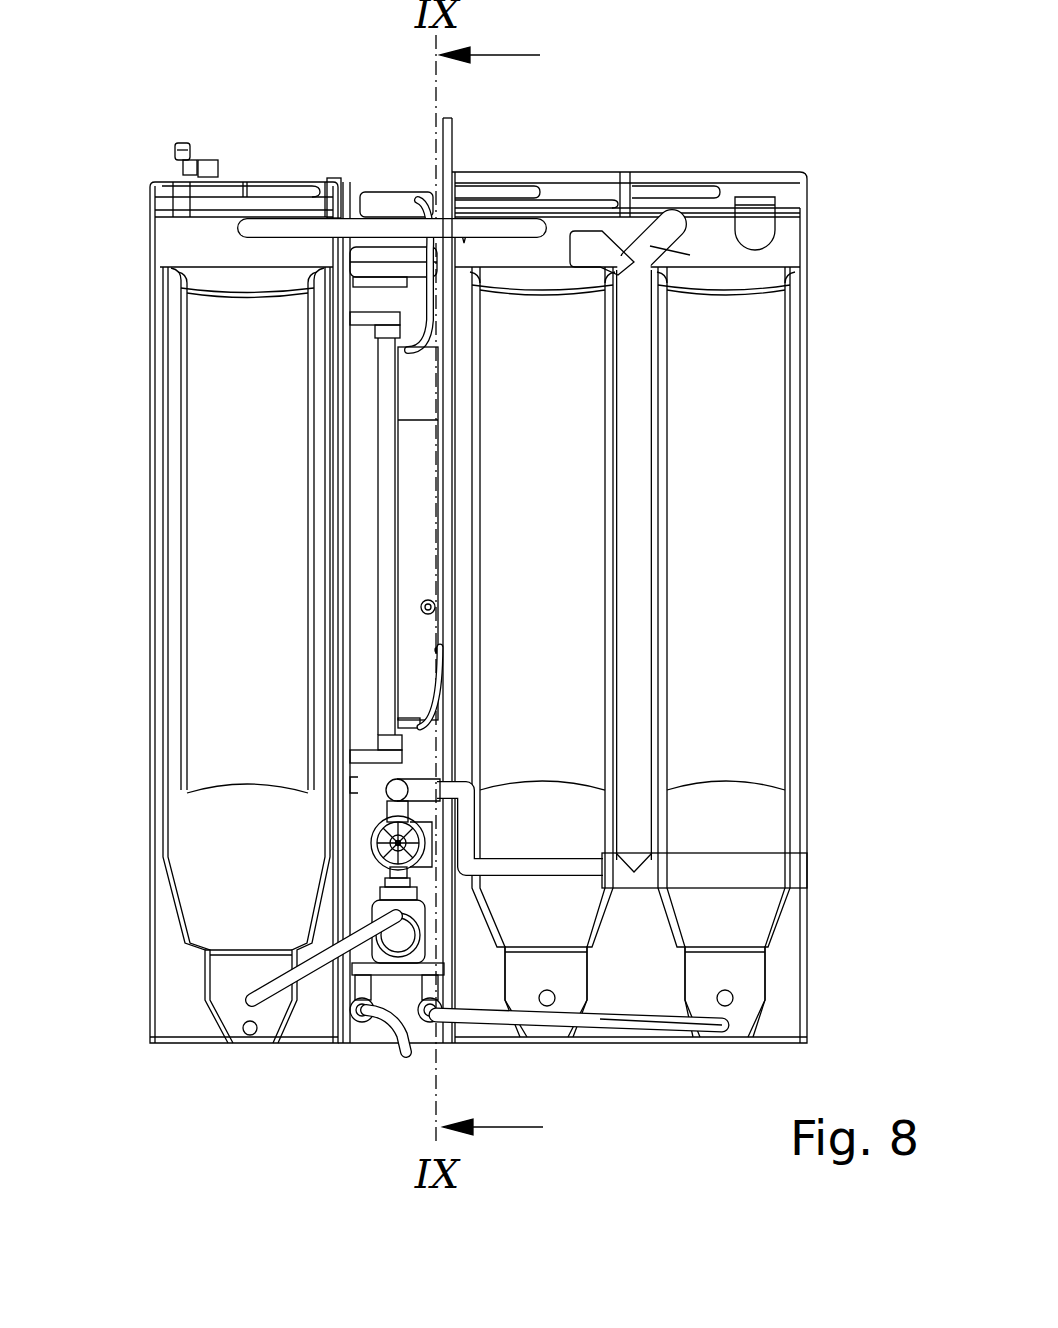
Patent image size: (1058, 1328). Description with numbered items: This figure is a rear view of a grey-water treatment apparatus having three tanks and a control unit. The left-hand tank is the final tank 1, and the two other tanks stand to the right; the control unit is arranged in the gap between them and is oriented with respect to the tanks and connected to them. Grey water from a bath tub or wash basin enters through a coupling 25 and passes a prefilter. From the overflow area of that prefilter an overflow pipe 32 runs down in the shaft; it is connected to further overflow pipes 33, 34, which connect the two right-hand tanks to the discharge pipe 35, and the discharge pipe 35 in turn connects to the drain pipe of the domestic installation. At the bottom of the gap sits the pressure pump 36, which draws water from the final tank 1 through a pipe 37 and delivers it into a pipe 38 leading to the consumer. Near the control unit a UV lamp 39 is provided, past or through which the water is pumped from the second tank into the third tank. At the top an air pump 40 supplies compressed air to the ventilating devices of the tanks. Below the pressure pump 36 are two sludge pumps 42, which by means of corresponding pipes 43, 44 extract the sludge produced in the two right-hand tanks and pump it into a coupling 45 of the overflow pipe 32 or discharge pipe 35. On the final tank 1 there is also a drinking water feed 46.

The final tank 1 is at (172, 1011).
The coupling 25 is at (763, 228).
The overflow pipe 32 is at (640, 477).
The overflow pipe 33 is at (407, 228).
The overflow pipe 34 is at (463, 243).
The discharge pipe 35 is at (770, 867).
The pressure pump 36 is at (403, 935).
The pipe 37 is at (265, 1002).
The pipe 38 is at (437, 785).
The UV lamp 39 is at (385, 637).
The air pump 40 is at (382, 195).
The sludge pump 42 is at (385, 1050).
The pipe 43 is at (492, 1027).
The pipe 44 is at (653, 1022).
The coupling 45 is at (600, 230).
The drinking water feed 46 is at (211, 140).